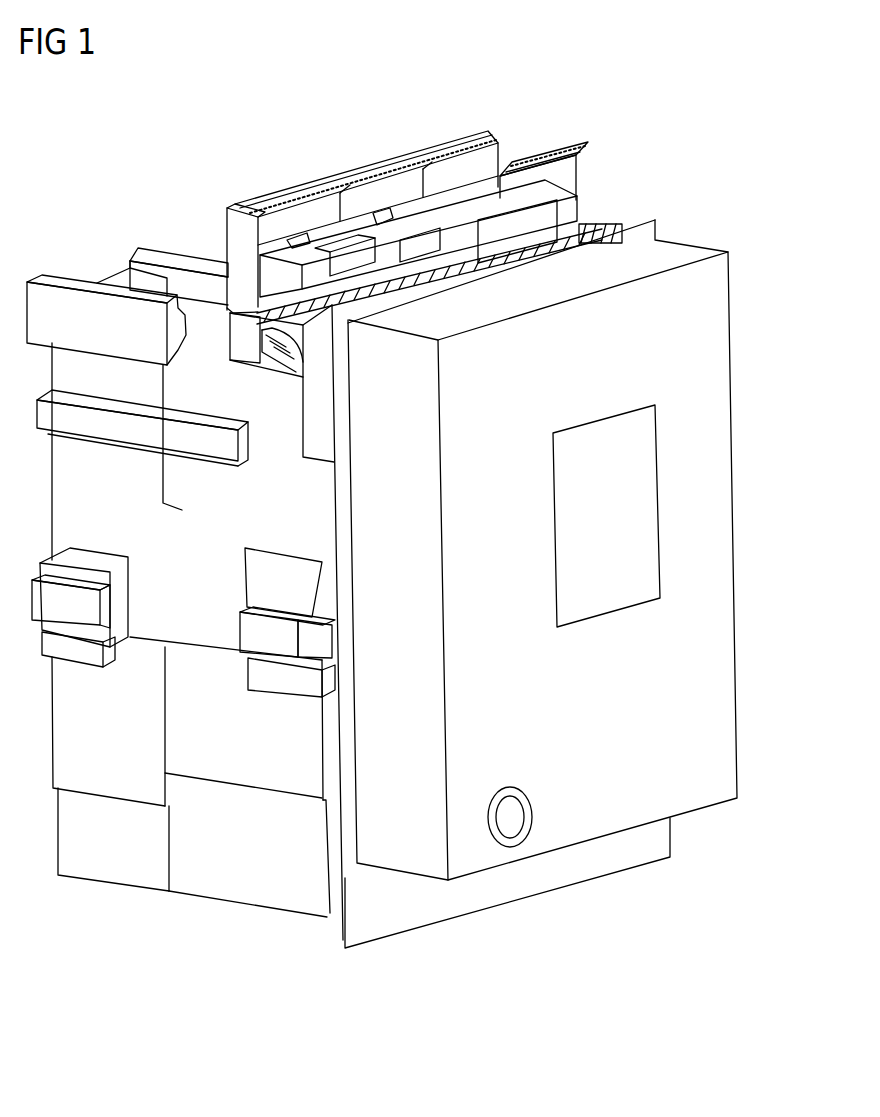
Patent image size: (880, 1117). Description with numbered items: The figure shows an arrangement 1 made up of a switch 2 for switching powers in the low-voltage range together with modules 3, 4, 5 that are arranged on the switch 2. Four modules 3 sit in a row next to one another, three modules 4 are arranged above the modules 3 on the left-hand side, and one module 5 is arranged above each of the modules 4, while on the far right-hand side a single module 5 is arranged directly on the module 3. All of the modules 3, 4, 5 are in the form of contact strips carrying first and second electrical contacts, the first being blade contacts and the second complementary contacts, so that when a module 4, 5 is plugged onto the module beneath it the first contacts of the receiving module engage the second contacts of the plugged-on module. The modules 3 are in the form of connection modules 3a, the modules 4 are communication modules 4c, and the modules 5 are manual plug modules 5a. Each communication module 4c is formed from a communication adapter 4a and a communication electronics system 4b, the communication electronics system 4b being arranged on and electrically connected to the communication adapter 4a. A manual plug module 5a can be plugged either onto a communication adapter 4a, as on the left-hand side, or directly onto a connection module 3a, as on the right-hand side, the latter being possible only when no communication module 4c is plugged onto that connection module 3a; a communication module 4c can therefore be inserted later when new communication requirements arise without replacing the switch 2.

The arrangement 1 is at (731, 218).
The switch 2 is at (722, 446).
The module 3 is at (262, 362).
The connection module 3a is at (237, 358).
The module 4 is at (248, 295).
The communication adapter 4a is at (250, 290).
The communication electronics system 4b is at (405, 272).
The communication module 4c is at (309, 298).
The module 5 is at (226, 228).
The manual plug module 5a is at (300, 216).